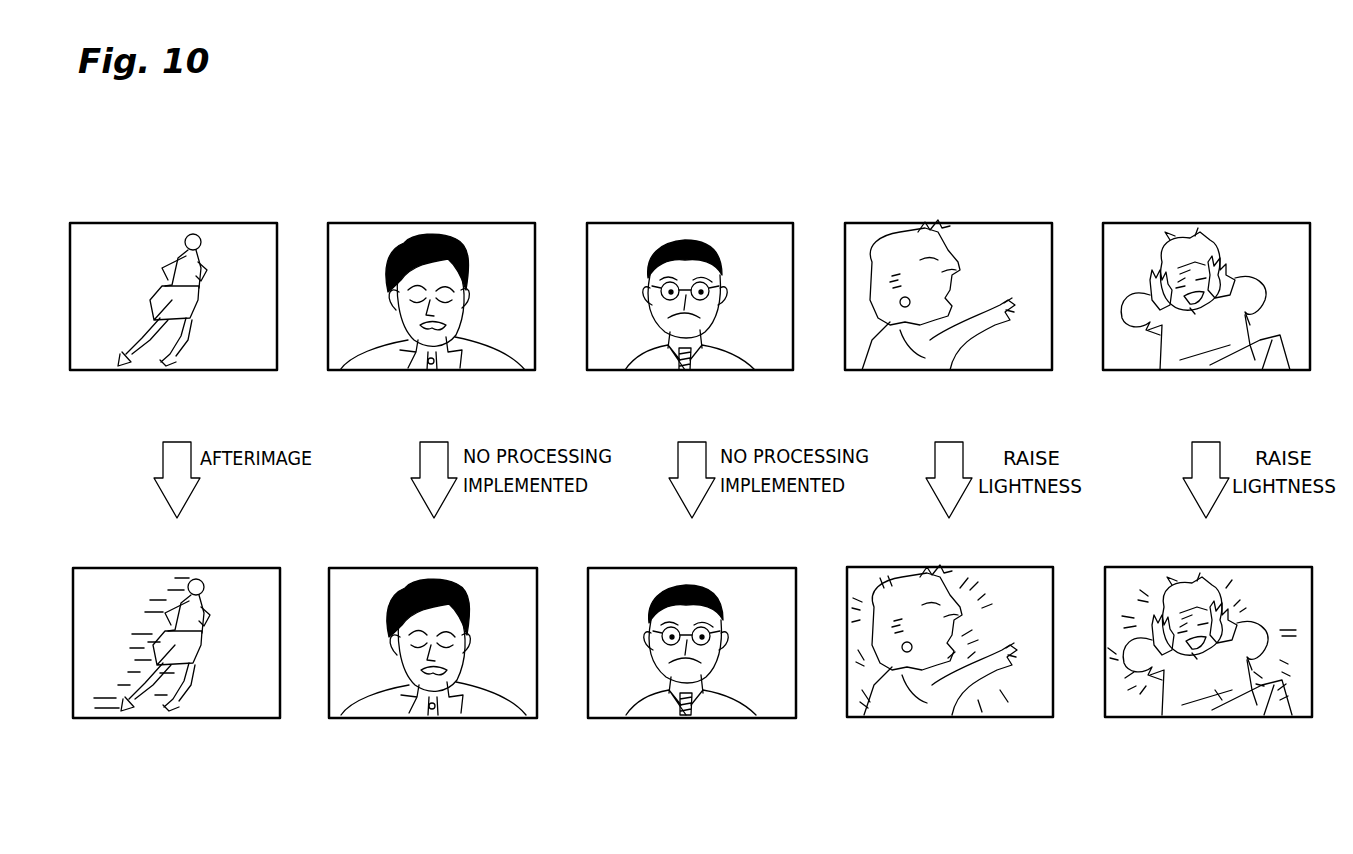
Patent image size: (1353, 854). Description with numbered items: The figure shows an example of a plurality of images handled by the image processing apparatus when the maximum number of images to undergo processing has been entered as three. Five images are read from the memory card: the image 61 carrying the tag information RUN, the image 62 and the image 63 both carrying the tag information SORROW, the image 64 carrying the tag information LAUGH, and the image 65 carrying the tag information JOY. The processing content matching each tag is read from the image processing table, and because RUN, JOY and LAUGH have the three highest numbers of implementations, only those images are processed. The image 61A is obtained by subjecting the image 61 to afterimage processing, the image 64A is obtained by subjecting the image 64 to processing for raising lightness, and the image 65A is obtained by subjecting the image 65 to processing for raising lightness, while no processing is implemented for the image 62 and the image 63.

The image 61 is at (221, 222).
The image 62 is at (483, 222).
The image 63 is at (735, 222).
The image 64 is at (985, 222).
The image 65 is at (1250, 222).
The image 61A is at (222, 568).
The image 64A is at (987, 567).
The image 65A is at (1250, 567).